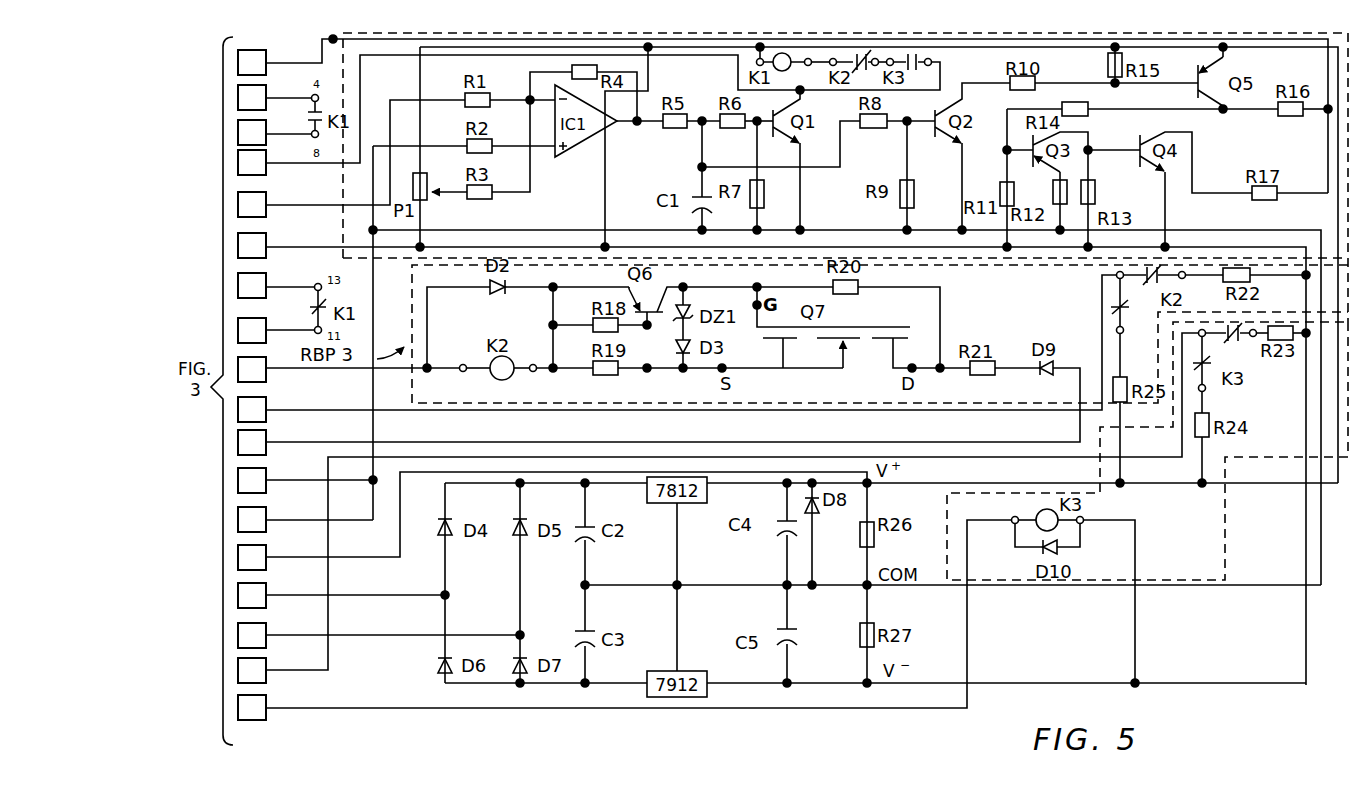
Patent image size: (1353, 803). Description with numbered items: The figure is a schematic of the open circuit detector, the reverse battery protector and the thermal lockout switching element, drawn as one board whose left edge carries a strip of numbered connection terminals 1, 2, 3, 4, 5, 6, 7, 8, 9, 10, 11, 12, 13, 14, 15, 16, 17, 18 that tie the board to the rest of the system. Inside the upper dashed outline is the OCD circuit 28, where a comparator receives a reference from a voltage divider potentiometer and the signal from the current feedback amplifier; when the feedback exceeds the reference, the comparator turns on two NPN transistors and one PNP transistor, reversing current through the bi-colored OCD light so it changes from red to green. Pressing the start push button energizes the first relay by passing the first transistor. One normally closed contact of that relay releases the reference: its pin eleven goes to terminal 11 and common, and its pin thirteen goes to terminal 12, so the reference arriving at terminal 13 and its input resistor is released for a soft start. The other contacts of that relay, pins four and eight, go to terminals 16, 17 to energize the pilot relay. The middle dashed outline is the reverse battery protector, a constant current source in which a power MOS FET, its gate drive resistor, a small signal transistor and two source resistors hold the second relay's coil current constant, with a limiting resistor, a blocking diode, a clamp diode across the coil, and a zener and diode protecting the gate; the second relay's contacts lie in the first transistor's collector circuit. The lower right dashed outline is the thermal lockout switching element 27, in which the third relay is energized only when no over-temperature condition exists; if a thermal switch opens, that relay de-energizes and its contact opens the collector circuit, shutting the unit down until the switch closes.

The terminal 1 is at (624, 620).
The terminal 2 is at (718, 508).
The terminal 3 is at (379, 635).
The terminal 4 is at (341, 595).
The terminal 5 is at (552, 521).
The terminal 6 is at (305, 519).
The terminal 7 is at (305, 480).
The terminal 8 is at (659, 411).
The terminal 9 is at (677, 348).
The terminal 10 is at (348, 369).
The terminal 11 is at (276, 330).
The terminal 12 is at (276, 285).
The terminal 13 is at (772, 459).
The terminal 14 is at (351, 158).
The terminal 15 is at (589, 115).
The terminal 16 is at (274, 132).
The terminal 17 is at (274, 97).
The terminal 18 is at (783, 114).
The thermal lockout switching element 27 is at (1224, 552).
The open circuit detector circuit 28 is at (333, 39).